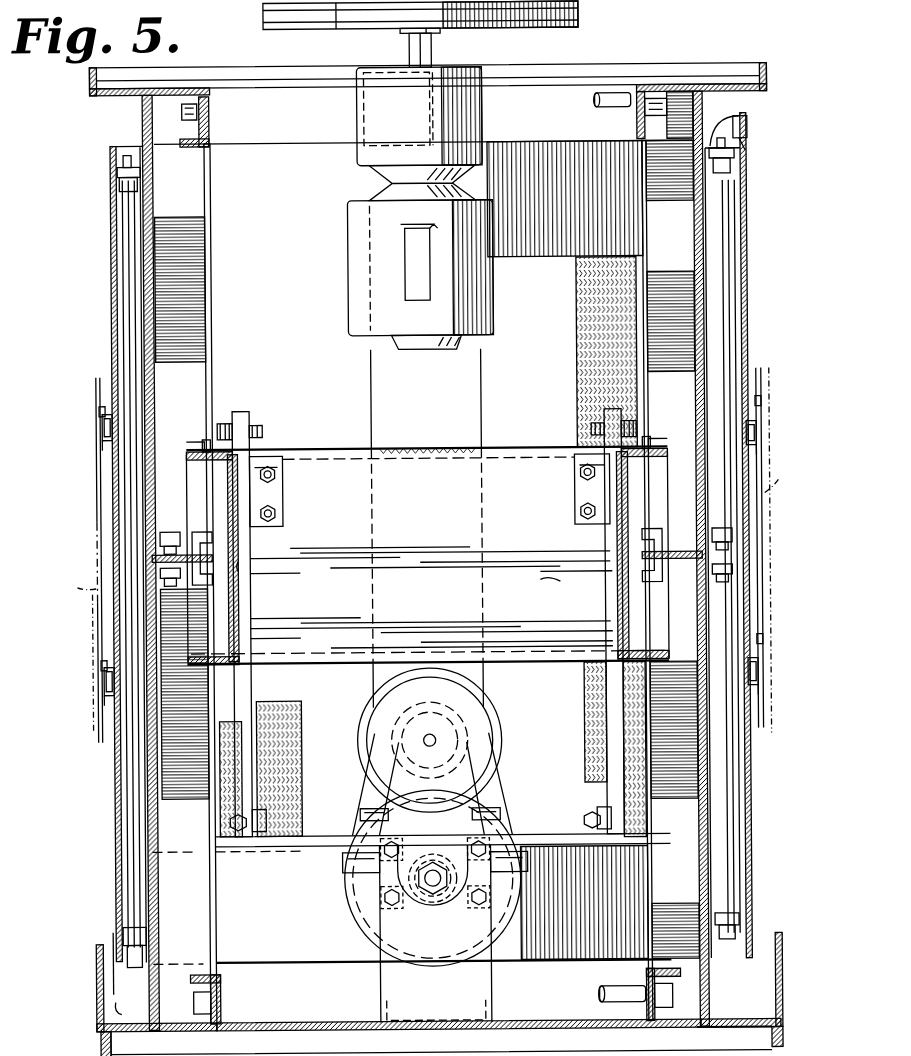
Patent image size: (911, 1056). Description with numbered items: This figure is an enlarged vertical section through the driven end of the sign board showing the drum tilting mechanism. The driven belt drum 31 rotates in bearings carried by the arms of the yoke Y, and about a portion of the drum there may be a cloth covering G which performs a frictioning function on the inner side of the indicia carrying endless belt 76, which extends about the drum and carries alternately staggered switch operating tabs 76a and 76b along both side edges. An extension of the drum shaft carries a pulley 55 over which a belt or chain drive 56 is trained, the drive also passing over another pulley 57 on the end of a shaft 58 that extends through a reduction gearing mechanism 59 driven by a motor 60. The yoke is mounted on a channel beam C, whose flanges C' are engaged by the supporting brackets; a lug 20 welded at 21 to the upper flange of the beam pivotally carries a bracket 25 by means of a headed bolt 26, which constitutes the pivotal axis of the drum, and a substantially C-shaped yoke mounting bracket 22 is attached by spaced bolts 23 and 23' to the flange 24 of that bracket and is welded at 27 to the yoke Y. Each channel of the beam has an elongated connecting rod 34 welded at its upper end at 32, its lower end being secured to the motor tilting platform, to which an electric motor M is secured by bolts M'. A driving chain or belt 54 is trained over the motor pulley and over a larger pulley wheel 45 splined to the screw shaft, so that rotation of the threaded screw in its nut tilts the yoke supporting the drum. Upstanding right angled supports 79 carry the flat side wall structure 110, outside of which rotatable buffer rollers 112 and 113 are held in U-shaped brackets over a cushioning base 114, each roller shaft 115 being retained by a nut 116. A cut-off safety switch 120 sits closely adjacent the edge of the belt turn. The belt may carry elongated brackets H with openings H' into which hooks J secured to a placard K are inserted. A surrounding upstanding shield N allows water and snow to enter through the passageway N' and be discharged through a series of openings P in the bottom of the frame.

The pulley 55 is at (584, 6).
The belt or chain drive 56 is at (532, 28).
The pulley 57 is at (376, 30).
The shaft 58 is at (436, 44).
The reduction gearing mechanism 59 is at (486, 103).
The motor 60 is at (496, 232).
The belt drum 31 is at (540, 162).
The cut-off safety switch 120 is at (626, 110).
The switch operating tab 76a is at (748, 118).
The indicia carrying endless belt 76 is at (745, 800).
The switch operating tab 76b is at (112, 990).
The side wall structure 110 is at (144, 128).
The buffer roller 112 is at (112, 232).
The buffer roller 113 is at (740, 258).
The upstanding right angled support 79 is at (200, 210).
The cloth covering G is at (600, 262).
The yoke Y is at (484, 410).
The lug 20 is at (226, 412).
The weld 21 is at (190, 438).
The yoke mounting bracket 22 is at (358, 448).
The bolt 23 is at (429, 490).
The bolt 23' is at (428, 523).
The flange 24 is at (250, 412).
The bracket 25 is at (272, 482).
The headed bolt 26 is at (264, 430).
The weld 27 is at (418, 446).
The weld 32 is at (240, 570).
The connecting rod 34 is at (615, 596).
The channel beam C is at (428, 557).
The flange C' is at (427, 558).
The hook J is at (100, 414).
The bracket H is at (432, 552).
The opening H' is at (432, 581).
The placard K is at (78, 584).
The cushioning base 114 is at (715, 512).
The shaft 115 is at (738, 546).
The nut 116 is at (736, 570).
The electric motor M is at (443, 739).
The bolt M' is at (442, 814).
The driving chain or belt 54 is at (500, 790).
The pulley wheel 45 is at (358, 916).
The shield N is at (434, 994).
The passageway N' is at (439, 945).
The opening P is at (738, 1020).